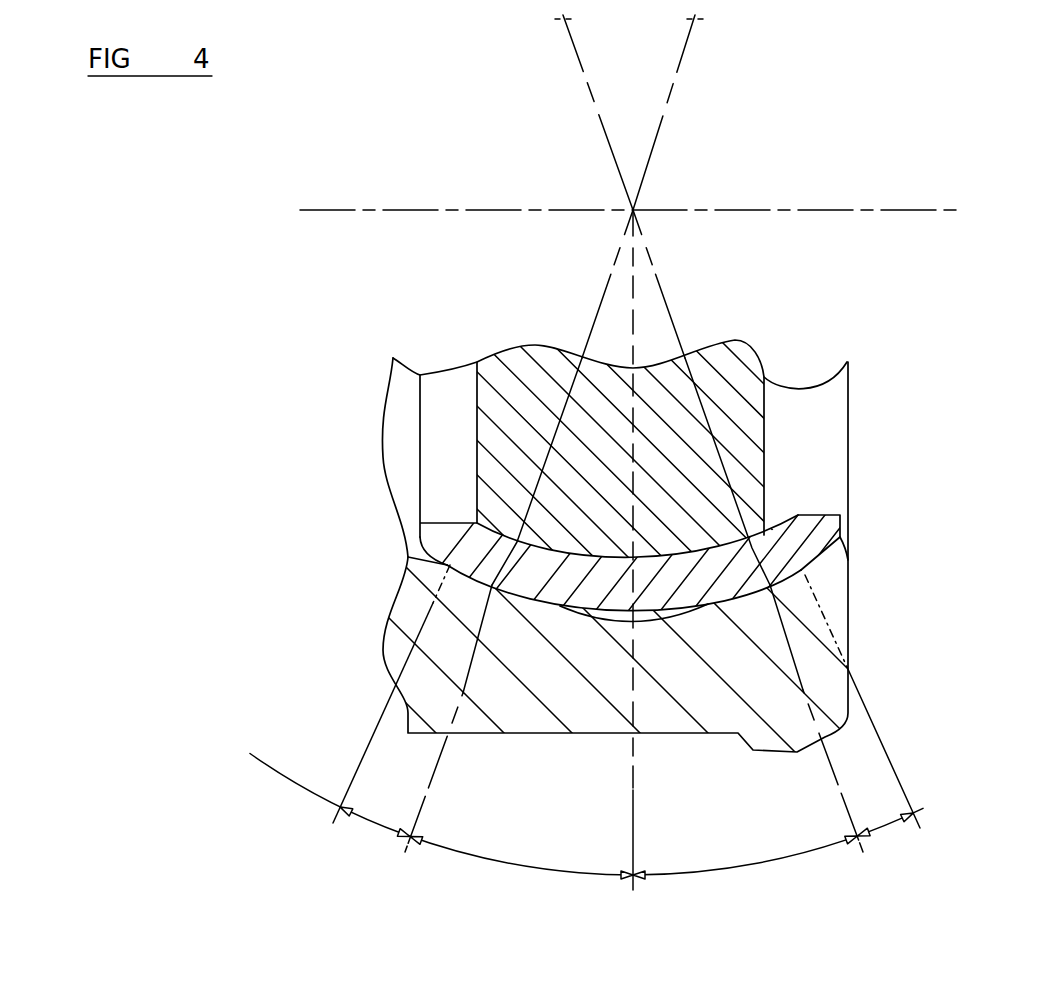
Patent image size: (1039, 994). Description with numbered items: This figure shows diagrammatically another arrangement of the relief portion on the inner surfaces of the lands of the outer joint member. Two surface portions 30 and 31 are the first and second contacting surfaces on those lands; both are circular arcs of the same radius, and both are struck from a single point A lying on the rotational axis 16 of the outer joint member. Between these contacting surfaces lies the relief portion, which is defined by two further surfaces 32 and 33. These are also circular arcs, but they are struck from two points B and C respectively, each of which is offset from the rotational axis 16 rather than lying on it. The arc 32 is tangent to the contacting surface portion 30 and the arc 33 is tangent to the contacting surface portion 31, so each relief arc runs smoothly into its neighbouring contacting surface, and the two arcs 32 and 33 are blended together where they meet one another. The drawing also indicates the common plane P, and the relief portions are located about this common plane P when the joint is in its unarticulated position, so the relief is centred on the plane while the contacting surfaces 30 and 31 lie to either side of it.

The rotational axis 16 is at (302, 208).
The first contacting surface portion 30 is at (923, 808).
The second contacting surface portion 31 is at (241, 753).
The relief portion surface 32 is at (748, 732).
The relief portion surface 33 is at (519, 732).
The point A is at (634, 209).
The point B is at (562, 27).
The point C is at (700, 27).
The common plane P is at (635, 793).